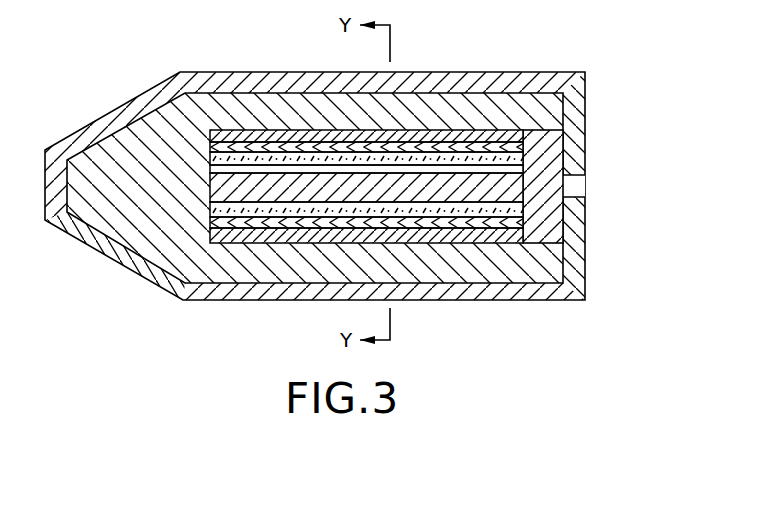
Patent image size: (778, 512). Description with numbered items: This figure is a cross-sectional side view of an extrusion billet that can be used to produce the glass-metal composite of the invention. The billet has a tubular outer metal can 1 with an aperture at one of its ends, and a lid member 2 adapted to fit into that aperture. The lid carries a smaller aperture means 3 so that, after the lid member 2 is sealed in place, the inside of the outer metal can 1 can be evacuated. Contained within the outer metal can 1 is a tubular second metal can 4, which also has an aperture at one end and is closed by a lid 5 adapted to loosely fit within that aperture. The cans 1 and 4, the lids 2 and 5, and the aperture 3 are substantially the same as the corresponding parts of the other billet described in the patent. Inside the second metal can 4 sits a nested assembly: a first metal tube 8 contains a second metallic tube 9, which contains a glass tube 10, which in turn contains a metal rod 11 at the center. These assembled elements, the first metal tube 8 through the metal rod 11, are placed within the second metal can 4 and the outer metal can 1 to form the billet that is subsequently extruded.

The tubular outer metal can 1 is at (133, 270).
The lid member 2 is at (573, 137).
The aperture means 3 is at (583, 176).
The second metal can 4 is at (210, 265).
The lid 5 is at (552, 222).
The first metal tube 8 is at (252, 238).
The second metallic tube 9 is at (267, 222).
The glass tube 10 is at (262, 158).
The metal rod 11 is at (288, 182).